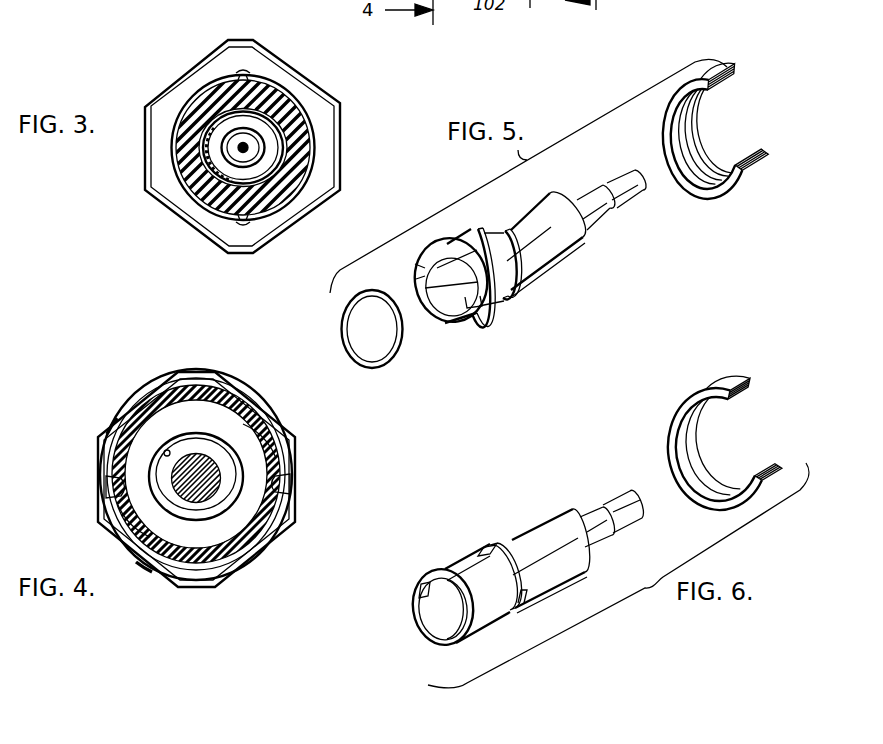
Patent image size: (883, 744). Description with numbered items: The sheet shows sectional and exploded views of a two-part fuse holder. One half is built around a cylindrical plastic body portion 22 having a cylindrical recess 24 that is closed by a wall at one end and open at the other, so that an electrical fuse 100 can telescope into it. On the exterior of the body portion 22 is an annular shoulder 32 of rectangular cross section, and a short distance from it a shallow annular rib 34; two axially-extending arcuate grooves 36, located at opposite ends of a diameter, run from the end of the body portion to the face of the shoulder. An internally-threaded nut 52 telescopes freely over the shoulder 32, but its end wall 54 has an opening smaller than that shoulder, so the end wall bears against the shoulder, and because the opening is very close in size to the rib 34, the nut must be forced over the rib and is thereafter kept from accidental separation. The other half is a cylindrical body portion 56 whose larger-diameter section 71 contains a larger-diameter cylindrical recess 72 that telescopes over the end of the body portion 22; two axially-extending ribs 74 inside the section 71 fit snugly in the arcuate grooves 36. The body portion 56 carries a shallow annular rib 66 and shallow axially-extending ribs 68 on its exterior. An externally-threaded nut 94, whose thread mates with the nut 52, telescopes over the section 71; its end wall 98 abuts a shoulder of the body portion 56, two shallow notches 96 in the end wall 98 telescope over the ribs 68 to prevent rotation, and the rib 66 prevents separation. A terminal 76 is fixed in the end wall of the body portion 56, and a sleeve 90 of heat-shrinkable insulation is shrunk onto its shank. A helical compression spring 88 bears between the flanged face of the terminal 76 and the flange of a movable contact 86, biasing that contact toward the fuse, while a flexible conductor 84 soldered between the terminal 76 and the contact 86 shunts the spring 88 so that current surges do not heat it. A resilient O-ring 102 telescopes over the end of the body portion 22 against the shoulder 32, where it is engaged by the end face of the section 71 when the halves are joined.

In FIG. 5, the body portion 22 is at (570, 265).
In FIG. 4, the cylindrical recess 24 is at (153, 450).
In FIG. 5, the cylindrical recess 24 is at (447, 307).
In FIG. 5, the annular shoulder 32 is at (493, 308).
In FIG. 5, the shallow annular rib 34 is at (515, 290).
In FIG. 4, the arcuate grooves 36 is at (113, 508).
In FIG. 5, the arcuate grooves 36 is at (418, 275).
In FIG. 4, the internally-threaded nut 52 is at (217, 582).
In FIG. 5, the internally-threaded nut 52 is at (713, 80).
In FIG. 5, the end wall 54 is at (740, 96).
In FIG. 3, the body portion 56 is at (308, 182).
In FIG. 4, the body portion 56 is at (160, 573).
In FIG. 6, the body portion 56 is at (545, 512).
In FIG. 3, the shallow annular rib 66 is at (300, 107).
In FIG. 6, the shallow annular rib 66 is at (523, 599).
In FIG. 3, the axially-extending ribs 68 is at (245, 78).
In FIG. 6, the axially-extending ribs 68 is at (490, 548).
In FIG. 4, the larger-diameter section 71 is at (213, 402).
In FIG. 6, the larger-diameter section 71 is at (448, 567).
In FIG. 6, the larger-diameter cylindrical recess 72 is at (433, 625).
In FIG. 4, the axially-extending ribs 74 is at (110, 487).
In FIG. 6, the axially-extending ribs 74 is at (421, 594).
In FIG. 6, the terminal 76 is at (618, 490).
In FIG. 3, the flexible conductor 84 is at (243, 148).
In FIG. 3, the movable contact 86 is at (263, 150).
In FIG. 3, the helical compression spring 88 is at (198, 200).
In FIG. 6, the sleeve 90 is at (607, 537).
In FIG. 3, the externally-threaded nut 94 is at (180, 78).
In FIG. 4, the externally-threaded nut 94 is at (253, 393).
In FIG. 6, the externally-threaded nut 94 is at (733, 387).
In FIG. 3, the shallow notches 96 is at (240, 72).
In FIG. 6, the shallow notches 96 is at (748, 405).
In FIG. 6, the end wall 98 is at (770, 462).
In FIG. 4, the electrical fuse 100 is at (190, 453).
In FIG. 5, the O-ring 102 is at (388, 368).